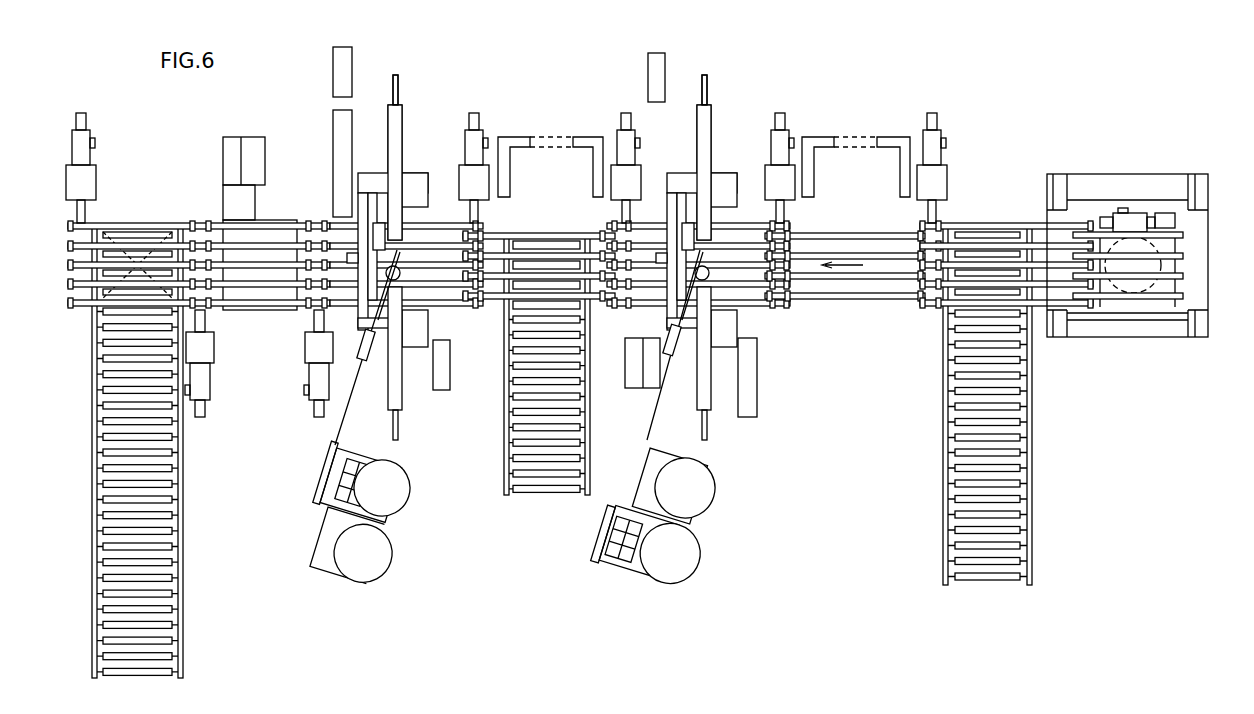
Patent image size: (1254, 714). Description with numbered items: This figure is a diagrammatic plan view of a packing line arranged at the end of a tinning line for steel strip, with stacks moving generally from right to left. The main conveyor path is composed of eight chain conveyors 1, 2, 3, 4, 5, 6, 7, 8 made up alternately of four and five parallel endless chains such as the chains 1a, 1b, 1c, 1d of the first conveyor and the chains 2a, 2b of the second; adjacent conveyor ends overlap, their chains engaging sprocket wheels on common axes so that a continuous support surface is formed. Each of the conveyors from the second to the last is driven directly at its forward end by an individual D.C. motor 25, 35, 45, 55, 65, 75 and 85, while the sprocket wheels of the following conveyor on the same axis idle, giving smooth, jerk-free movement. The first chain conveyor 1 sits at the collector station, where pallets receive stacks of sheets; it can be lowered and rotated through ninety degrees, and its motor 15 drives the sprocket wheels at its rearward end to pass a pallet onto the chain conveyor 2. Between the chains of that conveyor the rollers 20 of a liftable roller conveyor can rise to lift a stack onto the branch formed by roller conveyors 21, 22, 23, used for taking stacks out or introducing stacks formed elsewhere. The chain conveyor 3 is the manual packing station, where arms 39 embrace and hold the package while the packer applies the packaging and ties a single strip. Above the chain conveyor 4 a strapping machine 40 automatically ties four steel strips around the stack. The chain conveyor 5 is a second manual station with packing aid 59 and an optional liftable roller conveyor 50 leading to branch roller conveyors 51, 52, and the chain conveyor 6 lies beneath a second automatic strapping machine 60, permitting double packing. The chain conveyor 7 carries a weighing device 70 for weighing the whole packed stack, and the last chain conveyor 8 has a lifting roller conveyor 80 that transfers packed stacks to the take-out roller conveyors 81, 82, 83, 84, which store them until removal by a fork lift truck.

The chain conveyor 1 is at (1162, 233).
The chain 1a is at (1183, 233).
The chain 1b is at (1180, 256).
The chain 1c is at (1178, 276).
The chain 1d is at (1183, 297).
The motor 15 is at (1128, 223).
The chain conveyor 2 is at (1015, 223).
The chain 2a is at (1043, 227).
The chain 2b is at (1057, 245).
The rollers of liftable roller conveyor 20 is at (975, 233).
The roller conveyor 21 is at (968, 345).
The roller conveyor 22 is at (972, 438).
The roller conveyor 23 is at (972, 532).
The D.C. motor 25 is at (935, 147).
The chain conveyor 3 is at (848, 233).
The D.C. motor 35 is at (780, 143).
The arms 39 is at (863, 147).
The chain conveyor 4 is at (747, 223).
The strapping machine 40 is at (702, 148).
The D.C. motor 45 is at (630, 177).
The chain conveyor 5 is at (562, 235).
The liftable roller conveyor 50 is at (519, 243).
The roller conveyor 51 is at (525, 347).
The roller conveyor 52 is at (530, 440).
The D.C. motor 55 is at (475, 140).
The packing aid 59 is at (538, 140).
The chain conveyor 6 is at (443, 223).
The second automatic strapping machine 60 is at (395, 117).
The D.C. motor 65 is at (317, 378).
The chain conveyor 7 is at (280, 233).
The weighing device 70 is at (247, 203).
The D.C. motor 75 is at (202, 382).
The chain conveyor 8 is at (165, 223).
The lifting roller conveyor 80 is at (117, 243).
The roller conveyor 81 is at (112, 343).
The roller conveyor 82 is at (112, 437).
The roller conveyor 83 is at (115, 530).
The roller conveyor 84 is at (115, 627).
The D.C. motor 85 is at (81, 137).